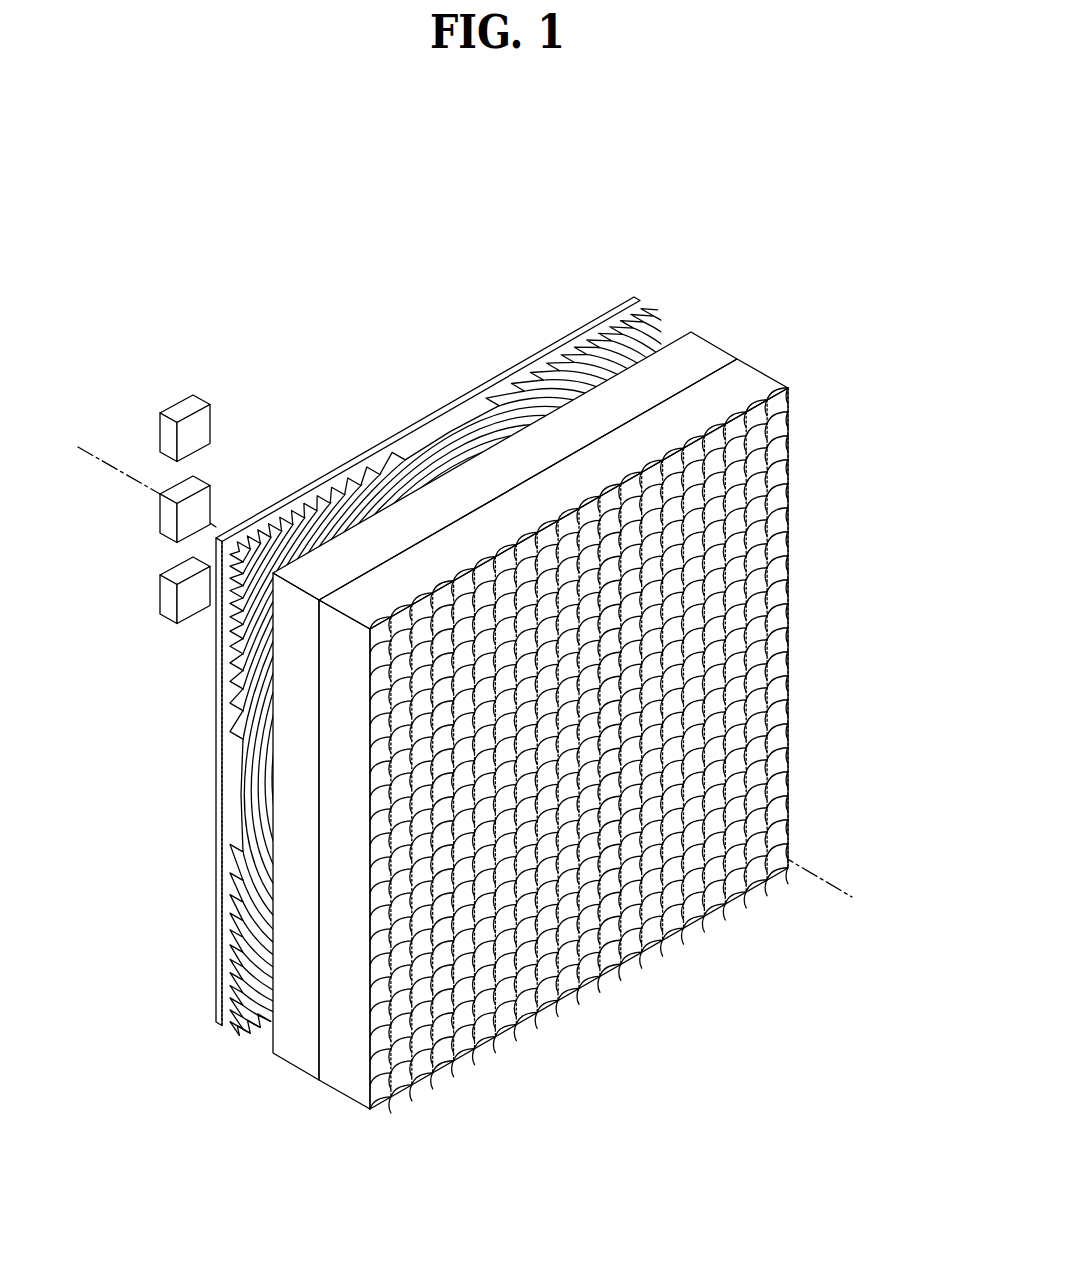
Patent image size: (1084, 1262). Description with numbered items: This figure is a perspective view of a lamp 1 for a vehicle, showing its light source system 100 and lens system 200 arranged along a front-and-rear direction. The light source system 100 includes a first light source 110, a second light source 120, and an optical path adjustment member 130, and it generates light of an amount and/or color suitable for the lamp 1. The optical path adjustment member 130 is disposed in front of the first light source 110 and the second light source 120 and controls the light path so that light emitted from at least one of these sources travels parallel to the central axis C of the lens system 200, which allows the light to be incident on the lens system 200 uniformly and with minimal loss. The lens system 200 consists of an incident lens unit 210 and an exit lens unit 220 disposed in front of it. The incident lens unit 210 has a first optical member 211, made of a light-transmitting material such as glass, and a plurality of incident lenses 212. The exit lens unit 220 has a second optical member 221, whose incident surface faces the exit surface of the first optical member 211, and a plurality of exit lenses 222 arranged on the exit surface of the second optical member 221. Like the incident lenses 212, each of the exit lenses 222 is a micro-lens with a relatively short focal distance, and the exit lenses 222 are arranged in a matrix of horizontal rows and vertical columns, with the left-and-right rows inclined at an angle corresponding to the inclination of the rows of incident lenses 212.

The lamp for a vehicle 1 is at (196, 222).
The central axis of the lens system C is at (454, 661).
The light source system 100 is at (333, 338).
The first light source 110 is at (198, 483).
The second light source 120 is at (163, 593).
The optical path adjustment member 130 is at (323, 487).
The lens system 200 is at (925, 370).
The incident lens unit 210 is at (773, 252).
The first optical member 211 is at (710, 351).
The incident lenses 212 is at (628, 360).
The exit lens unit 220 is at (877, 357).
The second optical member 221 is at (752, 378).
The exit lenses 222 is at (776, 401).